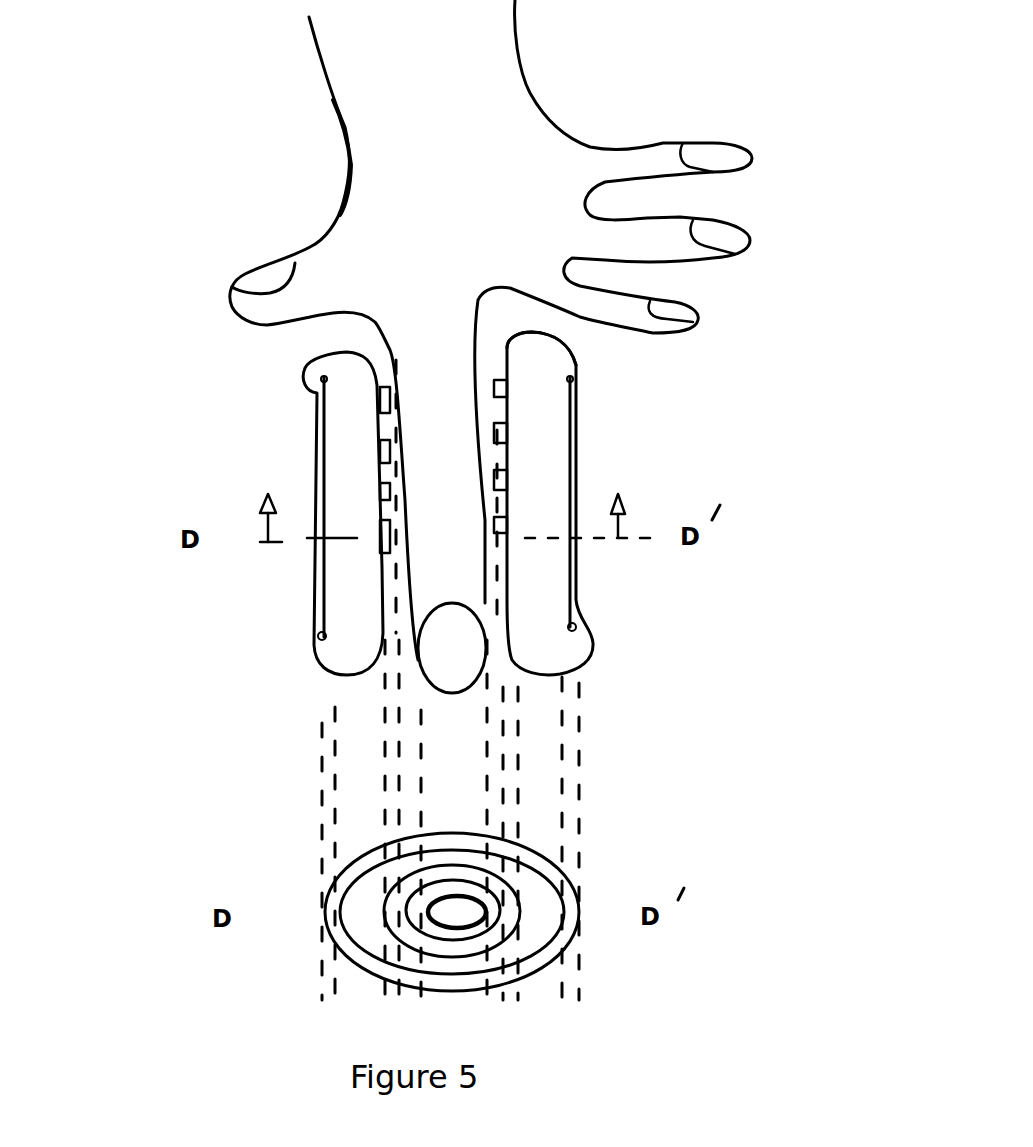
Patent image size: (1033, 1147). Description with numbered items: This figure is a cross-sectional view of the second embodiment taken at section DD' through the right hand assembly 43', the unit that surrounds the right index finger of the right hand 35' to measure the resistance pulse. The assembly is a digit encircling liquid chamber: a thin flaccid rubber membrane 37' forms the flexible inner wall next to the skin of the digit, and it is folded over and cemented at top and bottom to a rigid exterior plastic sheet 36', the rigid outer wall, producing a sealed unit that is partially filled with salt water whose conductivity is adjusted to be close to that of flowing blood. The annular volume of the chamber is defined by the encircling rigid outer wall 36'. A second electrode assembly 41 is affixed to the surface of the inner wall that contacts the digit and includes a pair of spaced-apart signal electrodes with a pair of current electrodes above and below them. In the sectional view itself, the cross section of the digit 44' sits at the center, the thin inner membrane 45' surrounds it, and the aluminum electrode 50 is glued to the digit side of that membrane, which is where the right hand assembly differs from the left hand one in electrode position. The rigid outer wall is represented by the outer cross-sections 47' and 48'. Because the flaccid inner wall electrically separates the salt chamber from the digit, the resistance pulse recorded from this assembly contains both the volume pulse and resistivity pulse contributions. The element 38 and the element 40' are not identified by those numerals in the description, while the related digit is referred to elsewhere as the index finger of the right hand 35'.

The right hand 35' is at (404, 330).
The rigid exterior plastic sheet 36' is at (240, 513).
The thin flaccid rubber membrane 37' is at (685, 353).
The palm support ball 38 is at (447, 588).
The second splint half 40' is at (682, 503).
The second electrode assembly 41 is at (498, 390).
The right hand assembly 43' is at (213, 540).
The cross section of the digit 44' is at (629, 811).
The thin inner membrane 45' is at (280, 911).
The rigid outer wall 47' is at (607, 912).
The rigid outer wall 48' is at (597, 927).
The aluminum electrode 50 is at (500, 930).